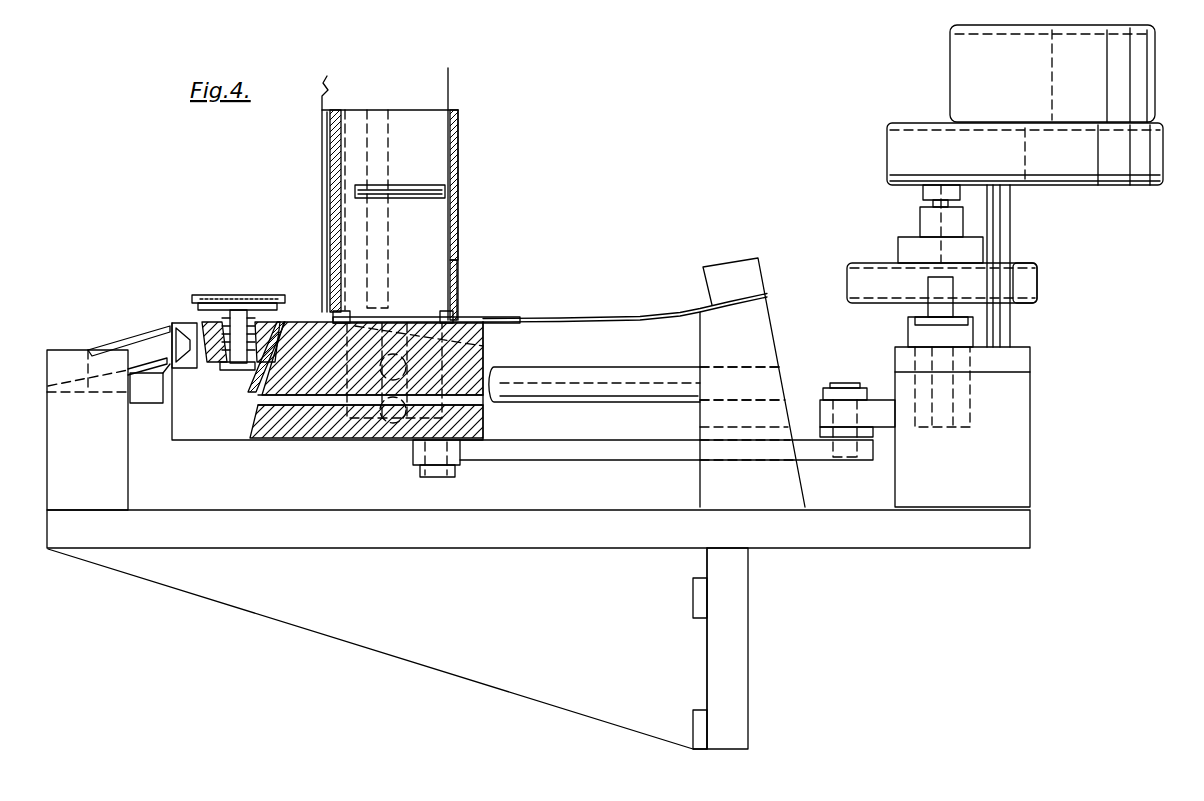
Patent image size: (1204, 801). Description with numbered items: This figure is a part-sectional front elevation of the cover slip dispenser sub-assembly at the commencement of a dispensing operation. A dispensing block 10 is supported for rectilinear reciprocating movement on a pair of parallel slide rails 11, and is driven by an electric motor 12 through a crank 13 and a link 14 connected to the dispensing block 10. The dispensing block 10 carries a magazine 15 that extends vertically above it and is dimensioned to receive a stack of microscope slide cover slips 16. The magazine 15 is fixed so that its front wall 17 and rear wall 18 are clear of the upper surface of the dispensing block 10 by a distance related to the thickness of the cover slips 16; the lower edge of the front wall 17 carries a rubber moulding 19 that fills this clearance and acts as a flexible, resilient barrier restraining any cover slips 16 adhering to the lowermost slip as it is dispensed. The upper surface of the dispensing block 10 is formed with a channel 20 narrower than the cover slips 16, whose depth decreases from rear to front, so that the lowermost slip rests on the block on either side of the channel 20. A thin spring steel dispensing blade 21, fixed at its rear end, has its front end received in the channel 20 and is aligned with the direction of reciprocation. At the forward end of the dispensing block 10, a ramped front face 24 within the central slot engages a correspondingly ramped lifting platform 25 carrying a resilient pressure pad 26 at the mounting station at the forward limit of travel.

The dispensing block 10 is at (331, 436).
The slide rails 11 is at (650, 368).
The electric motor 12 is at (960, 93).
The crank 13 is at (882, 400).
The link 14 is at (592, 452).
The magazine 15 is at (460, 152).
The cover slips 16 is at (394, 185).
The front wall 17 is at (322, 260).
The rear wall 18 is at (460, 276).
The rubber moulding 19 is at (332, 315).
The channel 20 is at (466, 317).
The dispensing blade 21 is at (589, 320).
The front face 24 is at (248, 390).
The lifting platform 25 is at (213, 348).
The resilient pressure pad 26 is at (224, 298).